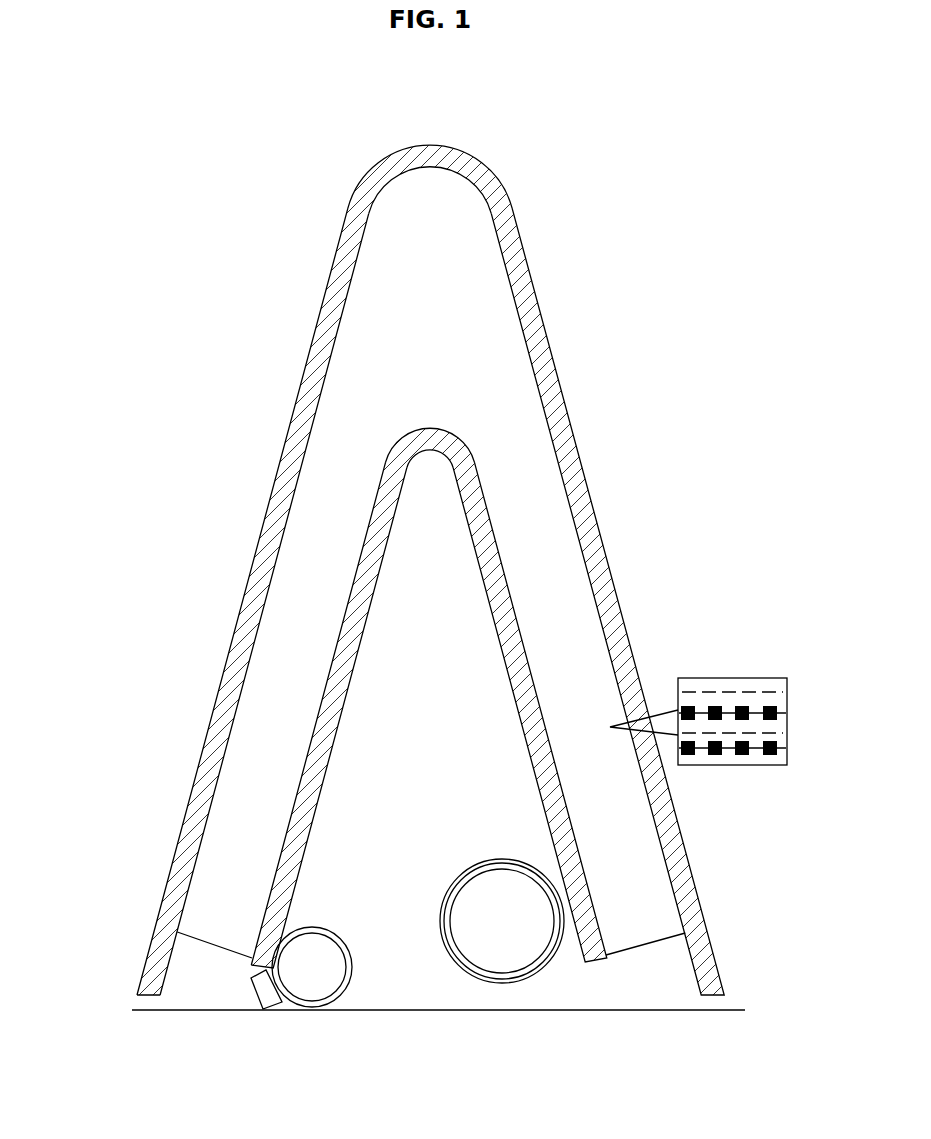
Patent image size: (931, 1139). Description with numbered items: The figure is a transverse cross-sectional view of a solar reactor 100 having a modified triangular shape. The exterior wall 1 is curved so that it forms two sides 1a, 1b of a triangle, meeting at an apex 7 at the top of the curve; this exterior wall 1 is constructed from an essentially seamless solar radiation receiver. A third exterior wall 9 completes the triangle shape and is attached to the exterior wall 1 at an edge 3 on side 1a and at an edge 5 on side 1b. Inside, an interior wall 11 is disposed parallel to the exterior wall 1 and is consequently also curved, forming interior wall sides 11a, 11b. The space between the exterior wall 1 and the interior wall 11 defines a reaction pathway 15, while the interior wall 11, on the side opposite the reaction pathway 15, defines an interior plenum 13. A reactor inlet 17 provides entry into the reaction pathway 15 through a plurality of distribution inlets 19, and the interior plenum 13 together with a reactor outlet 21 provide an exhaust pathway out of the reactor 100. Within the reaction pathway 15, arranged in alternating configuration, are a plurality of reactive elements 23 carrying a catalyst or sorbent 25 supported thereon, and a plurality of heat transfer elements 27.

The solar reactor 100 is at (573, 180).
The exterior wall 1 is at (233, 667).
The side of exterior wall 1a is at (245, 582).
The side of exterior wall 1b is at (605, 520).
The apex 7 is at (430, 147).
The interior wall 11 is at (297, 815).
The side of interior wall 11a is at (358, 649).
The side of interior wall 11b is at (517, 712).
The reaction pathway 15 is at (247, 808).
The edge 3 is at (132, 1010).
The edge 5 is at (745, 1010).
The third exterior wall 9 is at (490, 1010).
The interior plenum 13 is at (395, 905).
The reactor inlet 17 is at (310, 985).
The distribution inlets 19 is at (255, 995).
The reactor outlet 21 is at (503, 957).
The reactive elements 23 is at (782, 752).
The catalyst or sorbent 25 is at (713, 752).
The heat transfer elements 27 is at (708, 690).